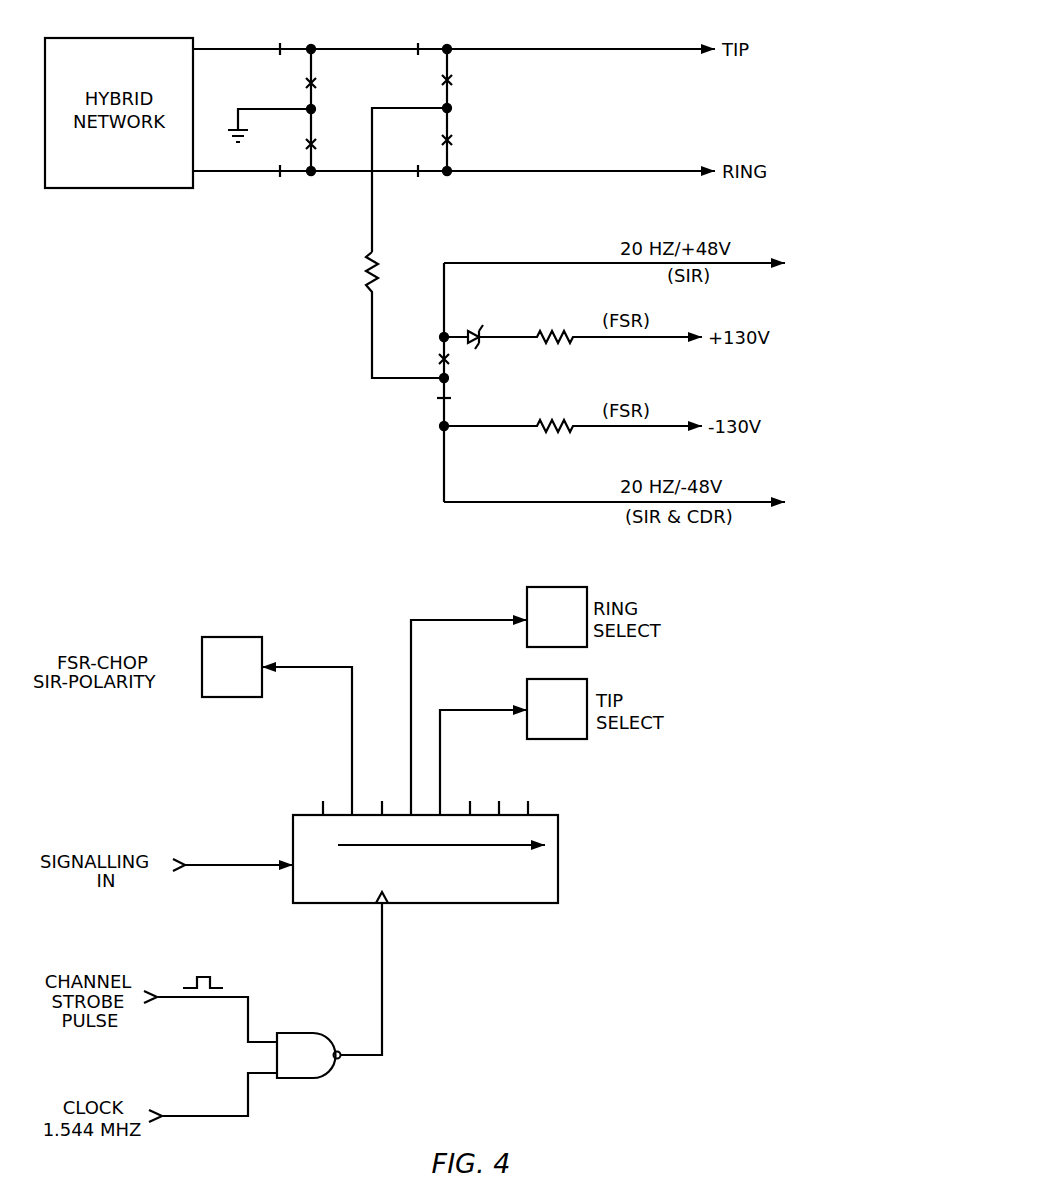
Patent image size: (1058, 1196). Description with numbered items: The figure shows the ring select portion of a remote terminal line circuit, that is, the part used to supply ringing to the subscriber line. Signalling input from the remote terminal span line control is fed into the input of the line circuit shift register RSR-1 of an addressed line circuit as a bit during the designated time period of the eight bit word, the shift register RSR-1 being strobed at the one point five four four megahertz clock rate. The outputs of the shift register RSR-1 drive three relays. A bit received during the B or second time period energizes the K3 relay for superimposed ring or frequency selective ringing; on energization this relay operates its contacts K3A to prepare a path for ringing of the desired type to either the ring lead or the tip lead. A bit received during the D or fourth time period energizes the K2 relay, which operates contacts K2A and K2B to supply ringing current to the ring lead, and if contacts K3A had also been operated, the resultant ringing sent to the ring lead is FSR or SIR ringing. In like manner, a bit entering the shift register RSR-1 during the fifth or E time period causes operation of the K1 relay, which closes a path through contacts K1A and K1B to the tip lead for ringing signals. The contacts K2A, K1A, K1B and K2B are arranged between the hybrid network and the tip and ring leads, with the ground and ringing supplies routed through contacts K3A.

The K1 relay K1 is at (557, 709).
The K2 relay K2 is at (557, 617).
The K3 relay K3 is at (232, 667).
The K1A contacts K1A is at (295, 140).
The K2A contacts K2A is at (289, 77).
The K1B contacts K1B is at (430, 77).
The K2B contacts K2B is at (428, 140).
The K3A contacts K3A is at (466, 382).
The line circuit shift register RSR-1 is at (558, 868).